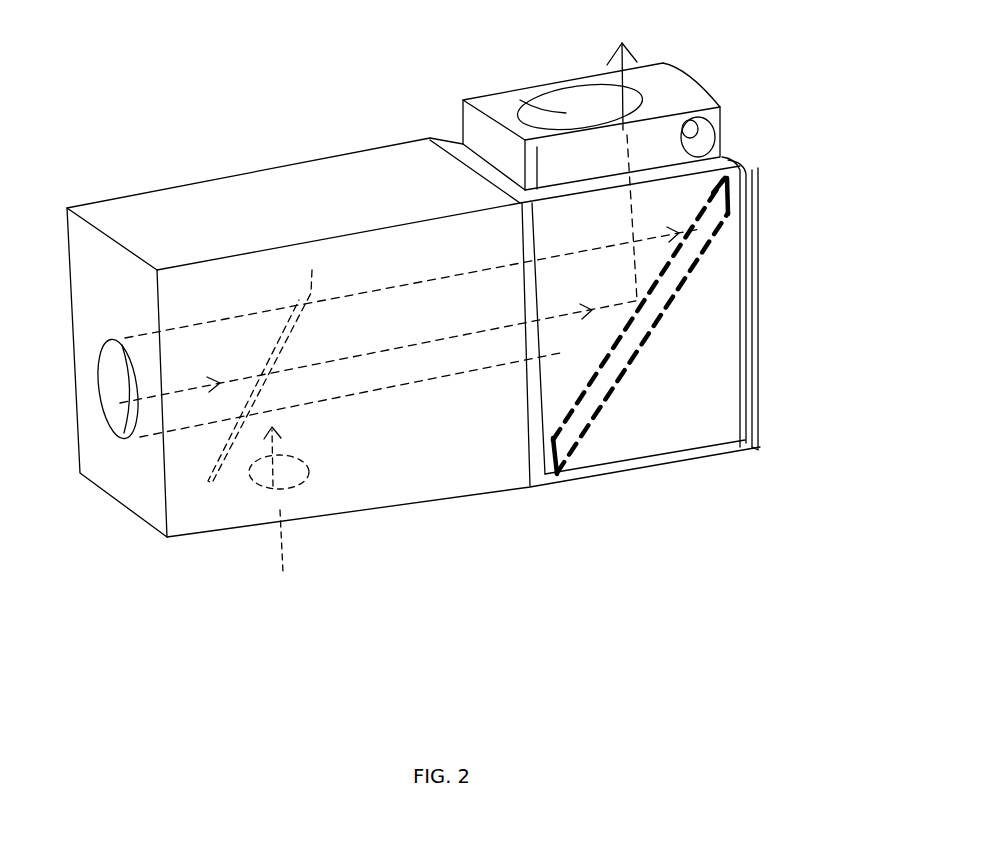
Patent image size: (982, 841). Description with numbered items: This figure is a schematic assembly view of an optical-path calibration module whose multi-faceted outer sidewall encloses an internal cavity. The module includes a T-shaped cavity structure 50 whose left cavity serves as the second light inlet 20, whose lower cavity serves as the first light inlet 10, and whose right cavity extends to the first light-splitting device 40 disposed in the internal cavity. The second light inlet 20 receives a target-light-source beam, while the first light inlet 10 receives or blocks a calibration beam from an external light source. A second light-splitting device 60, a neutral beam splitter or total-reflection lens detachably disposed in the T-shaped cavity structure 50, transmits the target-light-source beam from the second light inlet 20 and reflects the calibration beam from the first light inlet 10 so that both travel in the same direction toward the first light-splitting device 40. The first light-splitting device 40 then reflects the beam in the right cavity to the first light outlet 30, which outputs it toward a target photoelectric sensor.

The first light inlet 10 is at (288, 470).
The second light inlet 20 is at (117, 385).
The first light outlet 30 is at (487, 90).
The first light-splitting device 40 is at (683, 263).
The T-shaped cavity structure 50 is at (380, 427).
The second light-splitting device 60 is at (306, 290).